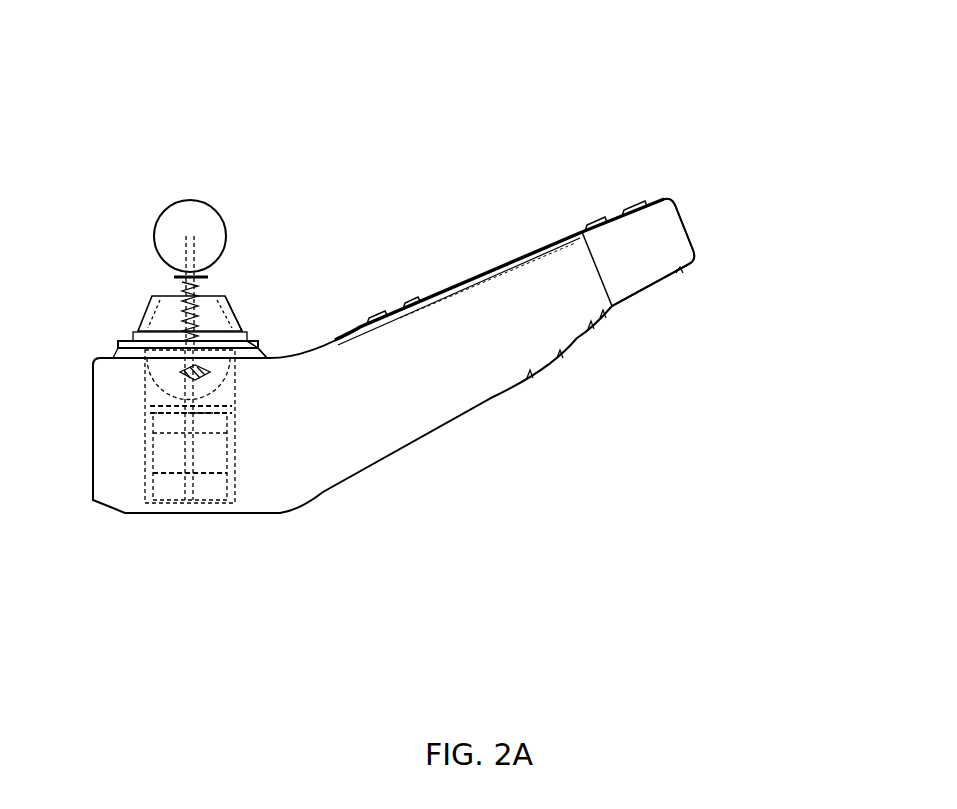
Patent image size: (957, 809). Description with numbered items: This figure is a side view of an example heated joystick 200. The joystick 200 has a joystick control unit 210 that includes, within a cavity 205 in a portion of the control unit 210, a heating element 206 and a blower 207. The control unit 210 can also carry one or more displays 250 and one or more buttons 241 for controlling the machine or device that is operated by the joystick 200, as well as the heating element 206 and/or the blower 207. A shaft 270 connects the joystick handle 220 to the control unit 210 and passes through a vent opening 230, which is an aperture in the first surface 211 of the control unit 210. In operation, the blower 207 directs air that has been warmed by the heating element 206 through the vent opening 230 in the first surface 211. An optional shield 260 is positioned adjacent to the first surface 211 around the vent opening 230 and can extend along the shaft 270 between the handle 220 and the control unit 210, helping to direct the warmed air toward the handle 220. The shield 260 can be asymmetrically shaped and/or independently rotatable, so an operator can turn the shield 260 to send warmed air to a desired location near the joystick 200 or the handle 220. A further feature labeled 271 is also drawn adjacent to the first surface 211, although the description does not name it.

The joystick 200 is at (86, 86).
The cavity 205 is at (163, 392).
The heating element 206 is at (233, 413).
The blower 207 is at (205, 447).
The joystick control unit 210 is at (493, 327).
The first surface 211 is at (135, 340).
The joystick handle 220 is at (184, 200).
The vent opening 230 is at (131, 340).
The button 241 is at (627, 197).
The display 250 is at (508, 258).
The shield 260 is at (245, 322).
The shaft 270 is at (200, 312).
The flange edge 271 is at (267, 355).